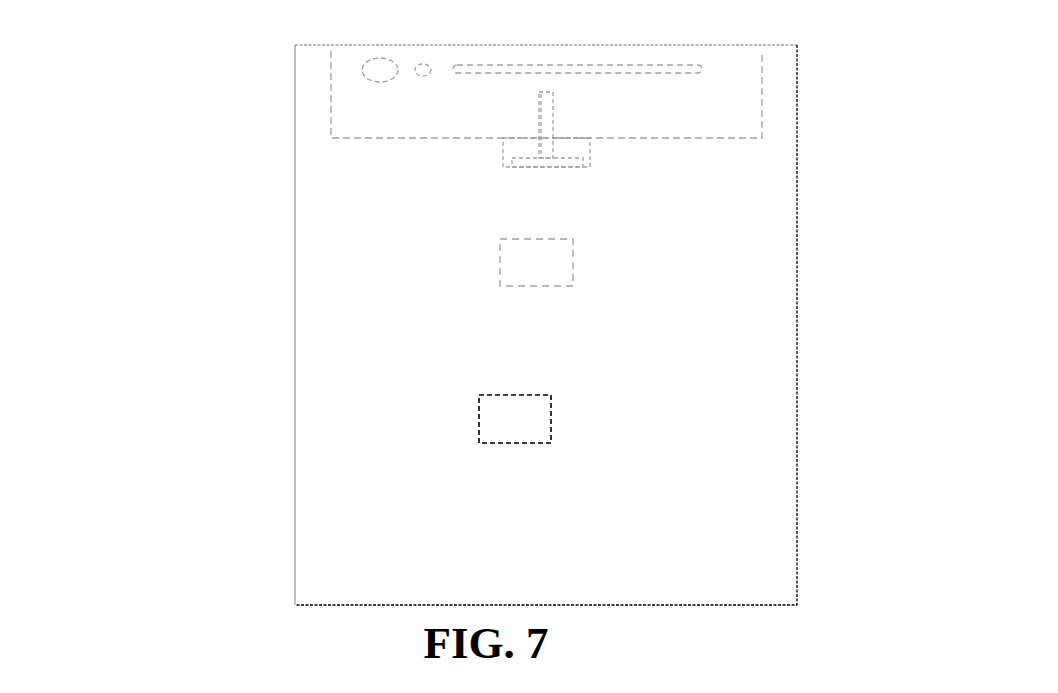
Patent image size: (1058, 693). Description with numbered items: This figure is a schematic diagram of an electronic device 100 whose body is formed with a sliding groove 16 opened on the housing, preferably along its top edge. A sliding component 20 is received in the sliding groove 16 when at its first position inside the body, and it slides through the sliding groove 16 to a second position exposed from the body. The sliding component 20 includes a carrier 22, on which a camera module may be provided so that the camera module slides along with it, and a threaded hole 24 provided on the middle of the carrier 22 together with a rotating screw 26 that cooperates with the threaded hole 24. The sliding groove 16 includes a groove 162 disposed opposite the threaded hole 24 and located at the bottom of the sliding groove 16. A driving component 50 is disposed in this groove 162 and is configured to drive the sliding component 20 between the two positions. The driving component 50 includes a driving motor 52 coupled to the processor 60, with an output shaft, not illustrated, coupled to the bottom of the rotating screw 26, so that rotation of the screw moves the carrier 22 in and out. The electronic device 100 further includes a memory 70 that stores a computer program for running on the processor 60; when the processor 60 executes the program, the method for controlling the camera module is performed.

The electronic device 100 is at (142, 172).
The sliding groove 16 is at (333, 135).
The groove 162 is at (573, 146).
The sliding component 20 is at (703, 52).
The carrier 22 is at (730, 70).
The threaded hole 24 is at (553, 92).
The rotating screw 26 is at (545, 107).
The driving component 50 is at (555, 163).
The driving motor 52 is at (547, 161).
The processor 60 is at (537, 268).
The memory 70 is at (553, 420).